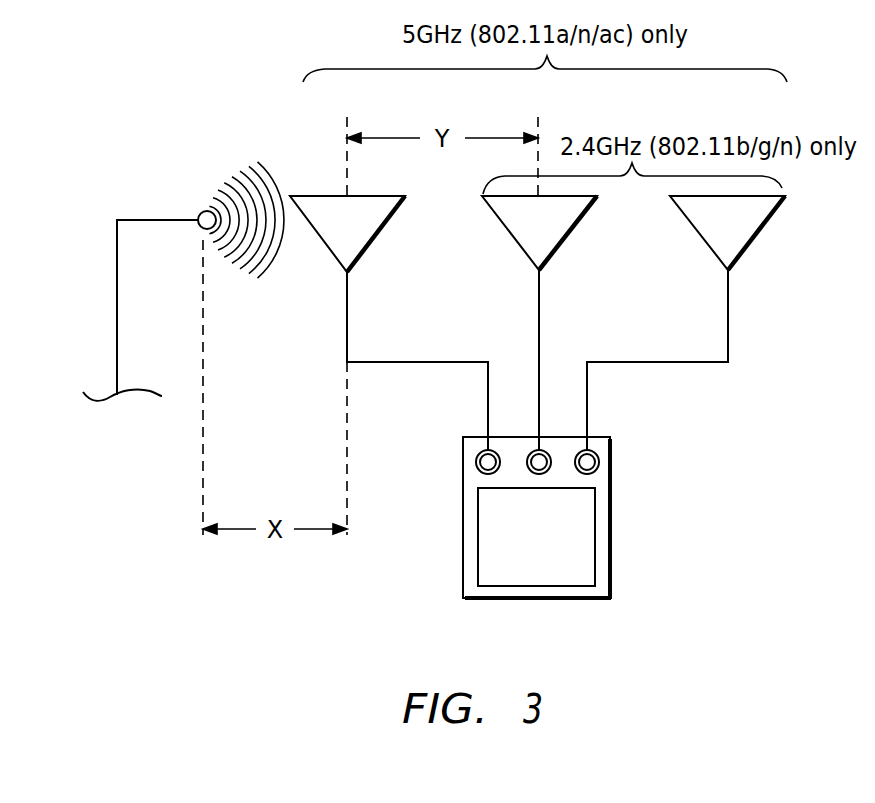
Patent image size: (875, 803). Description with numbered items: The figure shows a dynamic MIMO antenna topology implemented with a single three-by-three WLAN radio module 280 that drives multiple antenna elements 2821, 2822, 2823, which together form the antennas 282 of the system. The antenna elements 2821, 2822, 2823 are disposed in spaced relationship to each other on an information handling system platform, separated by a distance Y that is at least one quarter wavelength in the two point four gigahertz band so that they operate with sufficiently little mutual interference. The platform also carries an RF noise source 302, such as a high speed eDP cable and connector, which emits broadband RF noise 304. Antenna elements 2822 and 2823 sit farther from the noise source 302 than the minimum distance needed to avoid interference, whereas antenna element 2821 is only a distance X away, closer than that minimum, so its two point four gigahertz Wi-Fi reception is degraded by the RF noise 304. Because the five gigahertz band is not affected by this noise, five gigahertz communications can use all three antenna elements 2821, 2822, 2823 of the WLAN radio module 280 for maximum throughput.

The RF noise source 302 is at (200, 214).
The RF noise 304 is at (253, 167).
The antennas 282 is at (532, 323).
The first antenna element 2821 is at (328, 250).
The second antenna element 2822 is at (522, 250).
The third antenna element 2823 is at (708, 250).
The 3×3 WLAN radio module 280 is at (612, 528).